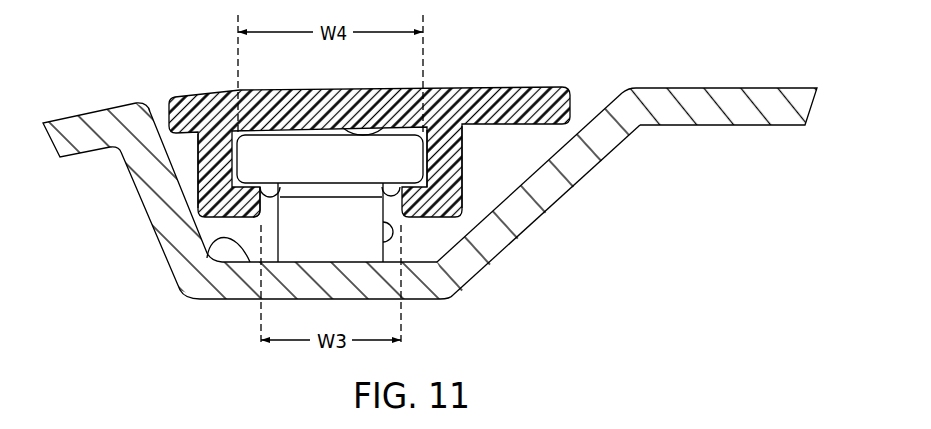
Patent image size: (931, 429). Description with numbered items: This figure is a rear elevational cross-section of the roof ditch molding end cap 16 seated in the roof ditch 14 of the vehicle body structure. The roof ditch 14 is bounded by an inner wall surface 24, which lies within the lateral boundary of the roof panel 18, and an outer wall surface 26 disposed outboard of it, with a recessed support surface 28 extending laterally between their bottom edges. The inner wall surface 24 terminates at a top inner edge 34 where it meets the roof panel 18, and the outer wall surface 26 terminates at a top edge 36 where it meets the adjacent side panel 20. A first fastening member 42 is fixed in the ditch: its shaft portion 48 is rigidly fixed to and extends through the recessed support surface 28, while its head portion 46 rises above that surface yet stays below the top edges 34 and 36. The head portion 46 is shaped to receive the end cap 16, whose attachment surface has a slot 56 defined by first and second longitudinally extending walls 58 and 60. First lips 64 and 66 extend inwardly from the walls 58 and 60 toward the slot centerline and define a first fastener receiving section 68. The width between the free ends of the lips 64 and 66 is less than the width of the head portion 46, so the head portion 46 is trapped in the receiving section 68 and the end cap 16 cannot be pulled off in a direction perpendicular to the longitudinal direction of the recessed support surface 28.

The roof ditch 14 is at (517, 173).
The roof ditch molding end cap 16 is at (207, 84).
The roof panel 18 is at (725, 88).
The side panel 20 is at (62, 119).
The inner wall surface 24 is at (548, 160).
The outer wall surface 26 is at (160, 127).
The recessed support surface 28 is at (207, 250).
The top inner edge 34 is at (628, 89).
The top edge 36 is at (149, 104).
The first fastening member 42 is at (298, 135).
The head portion 46 is at (429, 150).
The shaft portion 48 is at (386, 240).
The slot 56 is at (383, 127).
The first longitudinally extending wall 58 is at (463, 148).
The second longitudinally extending wall 60 is at (198, 168).
The first lip 64 is at (393, 188).
The first lip 66 is at (262, 203).
The first fastener receiving section 68 is at (271, 188).